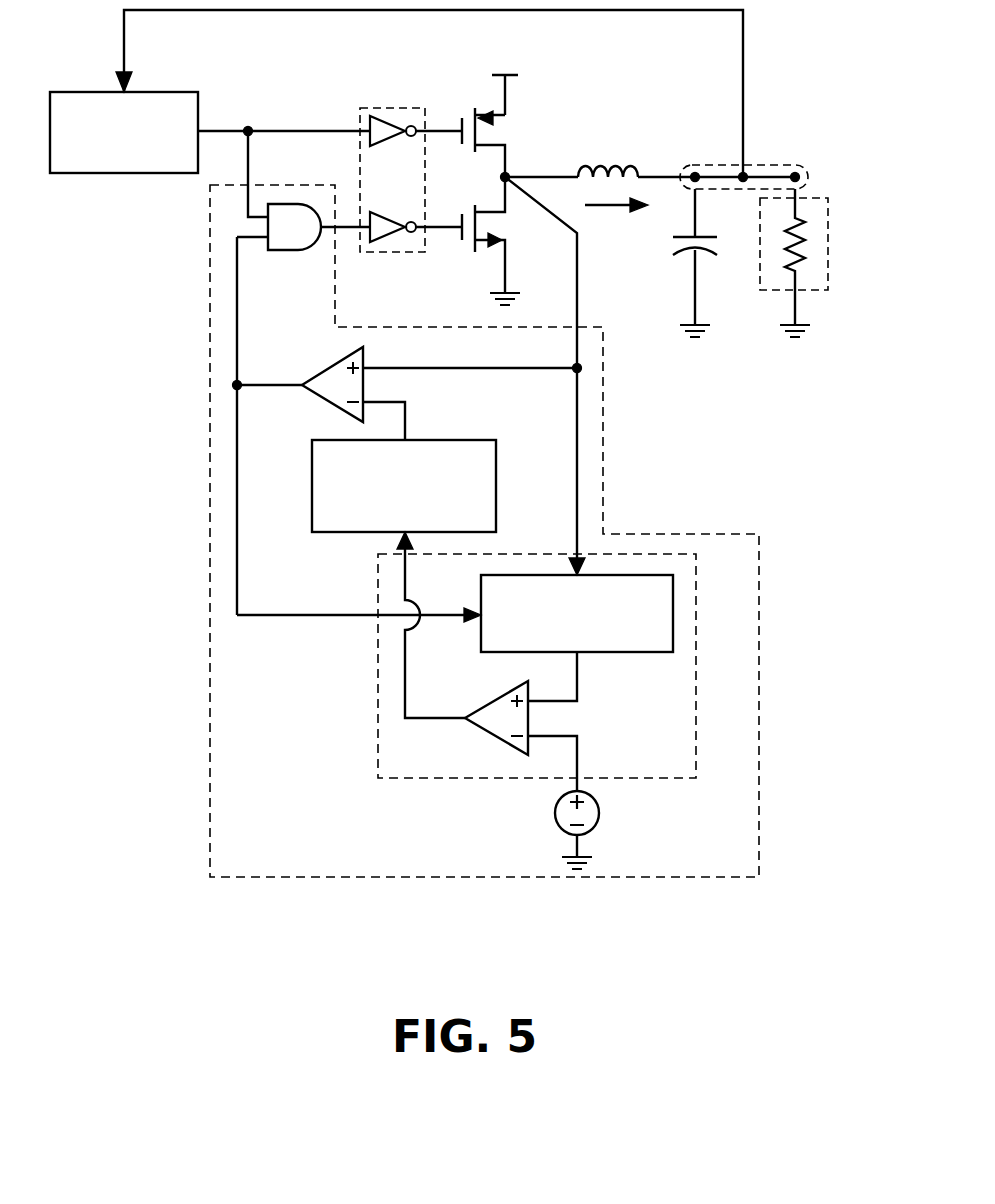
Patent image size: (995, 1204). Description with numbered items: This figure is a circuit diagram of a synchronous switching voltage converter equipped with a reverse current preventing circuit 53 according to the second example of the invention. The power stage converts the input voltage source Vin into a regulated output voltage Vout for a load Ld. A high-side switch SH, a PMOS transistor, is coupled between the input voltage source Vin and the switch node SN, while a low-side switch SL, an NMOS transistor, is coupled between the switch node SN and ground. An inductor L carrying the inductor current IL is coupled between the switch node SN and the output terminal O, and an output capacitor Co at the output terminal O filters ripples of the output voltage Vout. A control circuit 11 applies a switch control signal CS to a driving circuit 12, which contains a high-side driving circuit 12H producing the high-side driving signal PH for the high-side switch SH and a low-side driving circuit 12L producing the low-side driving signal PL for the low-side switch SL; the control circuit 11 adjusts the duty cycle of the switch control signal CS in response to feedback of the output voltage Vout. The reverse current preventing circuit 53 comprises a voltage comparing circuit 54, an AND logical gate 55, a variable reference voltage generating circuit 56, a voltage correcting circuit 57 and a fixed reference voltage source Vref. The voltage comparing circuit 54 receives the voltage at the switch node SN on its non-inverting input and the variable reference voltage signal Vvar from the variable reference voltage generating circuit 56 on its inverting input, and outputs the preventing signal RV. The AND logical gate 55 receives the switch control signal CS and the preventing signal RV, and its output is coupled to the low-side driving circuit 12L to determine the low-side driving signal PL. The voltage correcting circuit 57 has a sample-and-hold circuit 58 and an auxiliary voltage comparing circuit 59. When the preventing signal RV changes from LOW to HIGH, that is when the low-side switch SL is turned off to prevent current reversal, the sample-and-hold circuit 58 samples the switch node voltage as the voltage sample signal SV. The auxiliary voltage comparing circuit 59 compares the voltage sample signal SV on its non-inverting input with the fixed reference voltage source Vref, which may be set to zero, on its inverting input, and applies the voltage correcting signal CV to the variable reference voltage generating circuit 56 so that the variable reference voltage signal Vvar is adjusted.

The control circuit 11 is at (103, 173).
The driving circuit 12 is at (388, 105).
The high-side driving circuit 12H is at (388, 150).
The low-side driving circuit 12L is at (386, 213).
The high-side switch SH is at (492, 126).
The low-side switch SL is at (492, 232).
The inductor L is at (600, 152).
The output capacitor Co is at (678, 252).
The load Ld is at (830, 214).
The output terminal O is at (776, 165).
The reverse current preventing circuit 53 is at (762, 658).
The voltage comparing circuit 54 is at (325, 400).
The AND logical gate 55 is at (284, 252).
The variable reference voltage generating circuit 56 is at (498, 483).
The voltage correcting circuit 57 is at (698, 618).
The sample-and-hold circuit 58 is at (648, 654).
The auxiliary voltage comparing circuit 59 is at (502, 730).
The switch control signal CS is at (247, 127).
The high-side driving signal PH is at (448, 124).
The low-side driving signal PL is at (447, 232).
The input voltage source Vin is at (498, 81).
The switch node SN is at (500, 177).
The inductor current IL is at (616, 218).
The output voltage Vout is at (829, 156).
The preventing signal RV is at (270, 382).
The variable reference voltage signal Vvar is at (417, 402).
The voltage correcting signal CV is at (448, 714).
The voltage sample signal SV is at (580, 697).
The fixed reference voltage source Vref is at (600, 818).